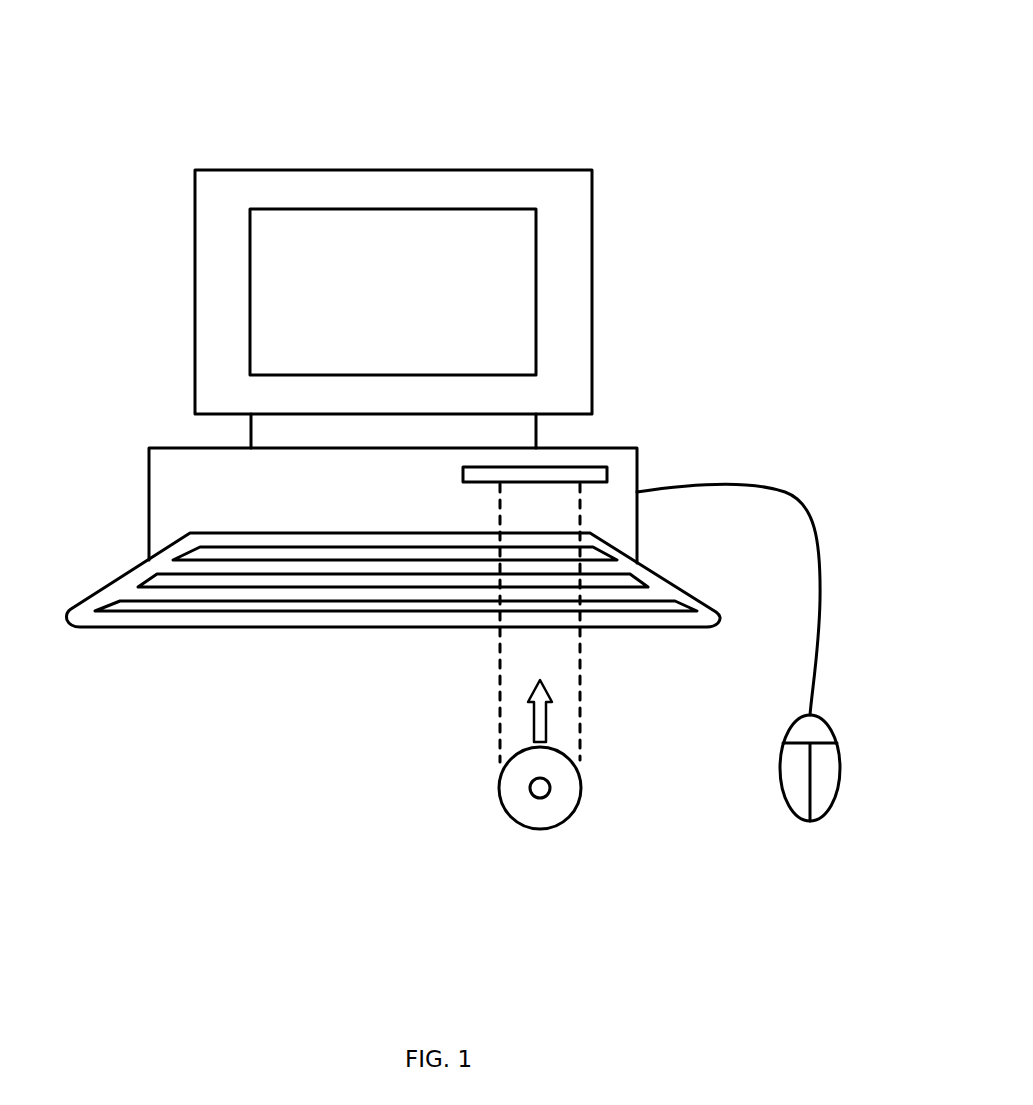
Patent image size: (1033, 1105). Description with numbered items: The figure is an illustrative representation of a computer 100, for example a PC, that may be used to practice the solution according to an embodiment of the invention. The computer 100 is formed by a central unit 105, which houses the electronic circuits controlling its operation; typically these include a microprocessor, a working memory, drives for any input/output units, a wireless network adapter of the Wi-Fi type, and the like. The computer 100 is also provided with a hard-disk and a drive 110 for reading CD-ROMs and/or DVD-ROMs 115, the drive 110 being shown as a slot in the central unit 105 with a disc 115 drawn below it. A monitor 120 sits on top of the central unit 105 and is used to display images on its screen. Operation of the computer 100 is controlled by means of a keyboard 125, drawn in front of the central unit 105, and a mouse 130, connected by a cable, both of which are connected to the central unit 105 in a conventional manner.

The computer 100 is at (638, 62).
The central unit 105 is at (175, 447).
The drive 110 is at (590, 463).
The CD-ROM/DVD-ROM 115 is at (513, 752).
The monitor 120 is at (293, 169).
The keyboard 125 is at (217, 627).
The mouse 130 is at (793, 718).